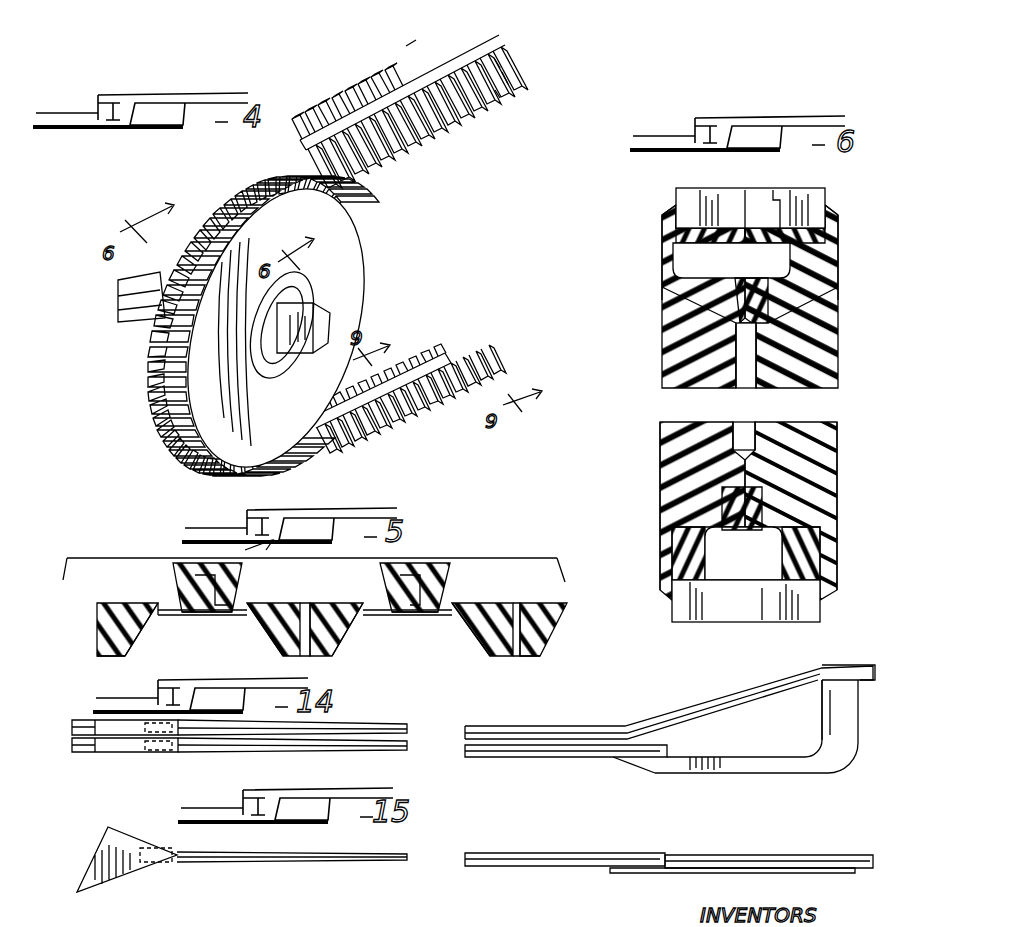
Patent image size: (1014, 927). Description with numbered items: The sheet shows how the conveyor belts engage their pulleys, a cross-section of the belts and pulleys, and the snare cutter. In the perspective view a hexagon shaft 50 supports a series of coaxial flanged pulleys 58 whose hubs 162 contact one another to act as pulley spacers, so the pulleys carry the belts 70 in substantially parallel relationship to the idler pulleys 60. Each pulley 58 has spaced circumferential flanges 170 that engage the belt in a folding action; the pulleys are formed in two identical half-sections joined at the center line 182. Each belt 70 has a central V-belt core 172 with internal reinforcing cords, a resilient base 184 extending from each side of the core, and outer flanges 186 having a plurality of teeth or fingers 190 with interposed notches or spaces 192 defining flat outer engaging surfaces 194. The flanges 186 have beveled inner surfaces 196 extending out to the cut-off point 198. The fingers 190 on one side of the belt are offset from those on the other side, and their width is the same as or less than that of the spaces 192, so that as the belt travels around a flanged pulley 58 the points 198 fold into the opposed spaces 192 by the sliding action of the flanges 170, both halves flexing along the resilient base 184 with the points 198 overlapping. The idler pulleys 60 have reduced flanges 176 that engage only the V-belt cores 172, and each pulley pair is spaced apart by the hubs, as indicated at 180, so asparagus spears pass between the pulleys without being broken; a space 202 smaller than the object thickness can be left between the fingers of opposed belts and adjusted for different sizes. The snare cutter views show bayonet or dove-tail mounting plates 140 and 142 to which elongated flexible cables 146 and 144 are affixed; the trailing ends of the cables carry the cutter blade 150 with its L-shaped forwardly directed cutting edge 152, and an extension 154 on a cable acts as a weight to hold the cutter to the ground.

In FIG. 4, the hexagon shaft 50 is at (303, 372).
In FIG. 4, the flanged pulley 58 is at (345, 270).
In FIG. 5, the idler pulley 60 is at (185, 568).
In FIG. 4, the belt 70 is at (510, 78).
In FIG. 5, the belt 70 is at (158, 618).
In FIG. 14, the dove-tail mounting plate 140 is at (125, 746).
In FIG. 15, the dove-tail mounting plate 140 is at (150, 862).
In FIG. 14, the dove-tail mounting plate 142 is at (100, 722).
In FIG. 14, the elongated flexible cable 144 is at (560, 727).
In FIG. 15, the elongated flexible cable 144 is at (730, 855).
In FIG. 14, the elongated flexible cable 146 is at (560, 757).
In FIG. 15, the elongated flexible cable 146 is at (540, 853).
In FIG. 14, the cutter blade 150 is at (812, 774).
In FIG. 15, the cutter blade 150 is at (630, 873).
In FIG. 14, the cutting edge 152 is at (826, 712).
In FIG. 14, the extension 154 is at (874, 665).
In FIG. 4, the hub 162 is at (315, 301).
In FIG. 4, the circumferential flange 170 is at (362, 236).
In FIG. 6, the circumferential flange 170 is at (672, 236).
In FIG. 5, the circumferential flange 170 is at (240, 616).
In FIG. 4, the V-belt core 172 is at (350, 176).
In FIG. 6, the V-belt core 172 is at (770, 312).
In FIG. 5, the V-belt core 172 is at (183, 606).
In FIG. 5, the flange 176 is at (390, 594).
In FIG. 5, the space 180 is at (368, 579).
In FIG. 6, the center line 182 is at (745, 376).
In FIG. 4, the resilient base 184 is at (450, 70).
In FIG. 6, the resilient base 184 is at (708, 282).
In FIG. 5, the resilient base 184 is at (180, 616).
In FIG. 4, the outer flange 186 is at (425, 64).
In FIG. 5, the outer flange 186 is at (108, 604).
In FIG. 4, the teeth or fingers 190 is at (470, 118).
In FIG. 4, the notches or spaces 192 is at (445, 136).
In FIG. 6, the notches or spaces 192 is at (690, 198).
In FIG. 5, the notches or spaces 192 is at (296, 614).
In FIG. 4, the flat outer engaging surface 194 is at (505, 92).
In FIG. 6, the flat outer engaging surface 194 is at (680, 190).
In FIG. 5, the flat outer engaging surface 194 is at (97, 630).
In FIG. 4, the beveled inner surface 196 is at (410, 48).
In FIG. 6, the beveled inner surface 196 is at (770, 212).
In FIG. 5, the beveled inner surface 196 is at (148, 640).
In FIG. 4, the cut-off point 198 is at (500, 60).
In FIG. 6, the cut-off point 198 is at (775, 196).
In FIG. 5, the cut-off point 198 is at (97, 660).
In FIG. 5, the space 202 is at (392, 618).